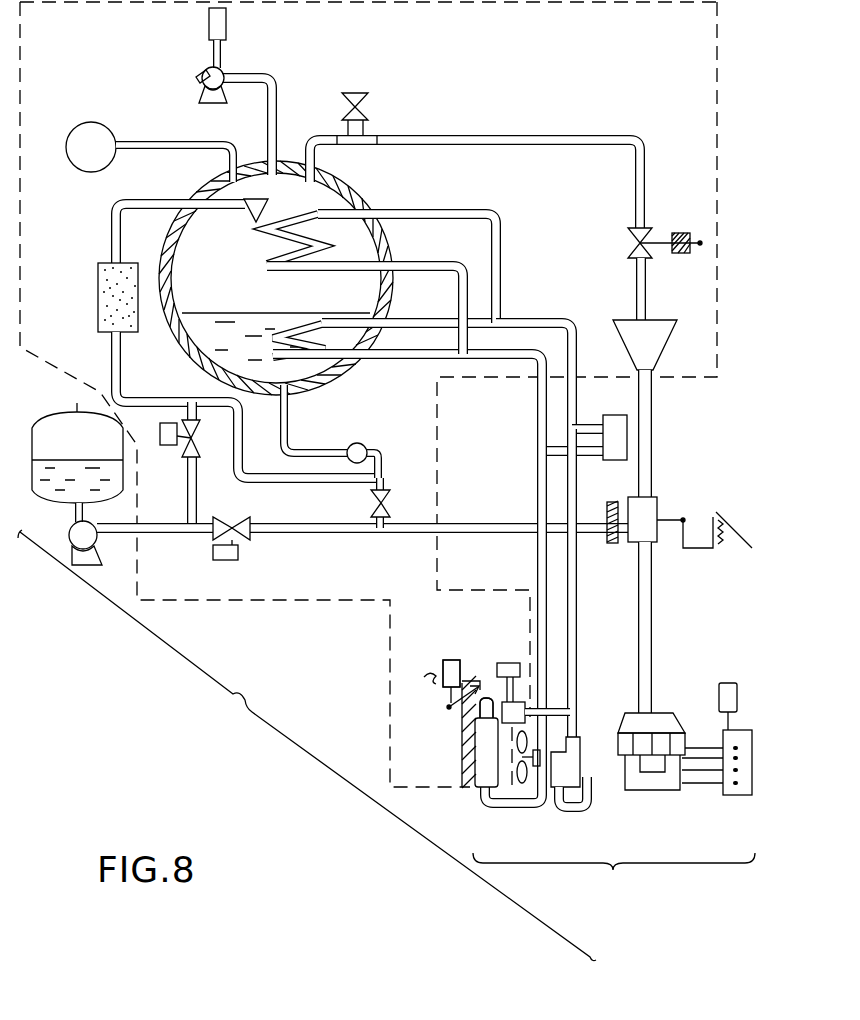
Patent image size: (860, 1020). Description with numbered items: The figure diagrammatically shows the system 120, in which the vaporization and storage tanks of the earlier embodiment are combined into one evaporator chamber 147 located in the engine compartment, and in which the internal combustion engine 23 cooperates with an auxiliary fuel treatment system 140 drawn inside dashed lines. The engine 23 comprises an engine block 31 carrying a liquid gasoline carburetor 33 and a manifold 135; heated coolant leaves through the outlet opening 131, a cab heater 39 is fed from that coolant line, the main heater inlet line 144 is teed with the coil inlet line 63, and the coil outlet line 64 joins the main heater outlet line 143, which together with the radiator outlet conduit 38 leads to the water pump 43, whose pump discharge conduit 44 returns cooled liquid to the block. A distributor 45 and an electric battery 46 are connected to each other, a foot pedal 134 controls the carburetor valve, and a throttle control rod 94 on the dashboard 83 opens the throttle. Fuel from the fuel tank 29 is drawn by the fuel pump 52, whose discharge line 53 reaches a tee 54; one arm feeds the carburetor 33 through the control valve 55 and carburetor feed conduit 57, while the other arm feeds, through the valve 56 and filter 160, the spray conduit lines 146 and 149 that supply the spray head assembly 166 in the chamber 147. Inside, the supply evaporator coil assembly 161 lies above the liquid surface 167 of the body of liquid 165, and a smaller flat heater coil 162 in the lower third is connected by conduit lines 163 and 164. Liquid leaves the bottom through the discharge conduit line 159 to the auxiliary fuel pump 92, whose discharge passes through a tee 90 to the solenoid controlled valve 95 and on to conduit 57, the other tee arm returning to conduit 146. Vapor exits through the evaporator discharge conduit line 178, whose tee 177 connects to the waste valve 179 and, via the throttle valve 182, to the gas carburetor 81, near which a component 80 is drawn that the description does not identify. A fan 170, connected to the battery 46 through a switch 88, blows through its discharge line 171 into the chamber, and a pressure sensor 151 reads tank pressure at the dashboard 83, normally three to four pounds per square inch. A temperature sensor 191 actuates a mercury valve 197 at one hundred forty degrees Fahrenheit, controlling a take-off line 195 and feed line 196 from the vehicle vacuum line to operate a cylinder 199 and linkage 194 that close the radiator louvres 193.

The engine assembly 23 is at (614, 881).
The fuel tank 29 is at (99, 389).
The engine block 31 is at (655, 786).
The liquid gasoline carburetor 33 is at (648, 512).
The radiator outlet conduit 38 is at (503, 806).
The cab heater 39 is at (615, 420).
The water pump 43 is at (568, 757).
The pump discharge conduit 44 is at (577, 812).
The distributor 45 is at (739, 795).
The electric battery 46 is at (722, 682).
The fuel pump 52 is at (70, 531).
The discharge line 53 is at (130, 530).
The tee 54 is at (215, 538).
The carburetor feed conduit control valve 55 is at (245, 544).
The valve 56 is at (189, 444).
The carburetor feed conduit 57 is at (500, 522).
The coil inlet conduit line 63 is at (430, 211).
The coil outlet conduit line 64 is at (440, 248).
The funnel collector 80 is at (650, 306).
The gas carburetor 81 is at (660, 334).
The dashboard 83 is at (696, 252).
The switch 88 is at (226, 22).
The tee 90 is at (386, 472).
The auxiliary fuel pump 92 is at (361, 441).
The throttle control rod 94 is at (668, 289).
The solenoid controlled valve 95 is at (389, 499).
The system 120 is at (307, 745).
The coolant liquid outlet opening 131 is at (578, 733).
The foot pedal 134 is at (716, 519).
The manifold 135 is at (619, 535).
The auxiliary fuel treatment system 140 is at (300, 604).
The main heater outlet line 143 is at (540, 577).
The main heater inlet line 144 is at (576, 621).
The spray conduit line 146 is at (111, 356).
The evaporator chamber 147 is at (203, 186).
The spray conduit line 149 is at (221, 210).
The pressure sensor 151 is at (92, 138).
The evaporator liquid discharge conduit line 159 is at (289, 416).
The filter 160 is at (100, 302).
The supply evaporator coil assembly 161 is at (323, 238).
The flat heater coil 162 is at (291, 332).
The conduit line of lower heater coil 163 is at (441, 320).
The conduit line of lower heater coil 164 is at (420, 356).
The body of liquid 165 is at (276, 336).
The spray head assembly 166 is at (262, 206).
The liquid surface 167 is at (348, 312).
The fan 170 is at (203, 70).
The discharge line 171 is at (268, 90).
The tee 177 is at (360, 144).
The evaporator discharge conduit line 178 is at (412, 141).
The evaporator waste conduit line valve 179 is at (352, 90).
The throttle valve 182 is at (642, 233).
The temperature sensor 191 is at (528, 681).
The louvres 193 is at (462, 760).
The linkage 194 is at (442, 705).
The take-off line 195 is at (443, 664).
The feed line 196 is at (414, 688).
The mercury valve 197 is at (489, 697).
The cylinder 199 is at (456, 660).